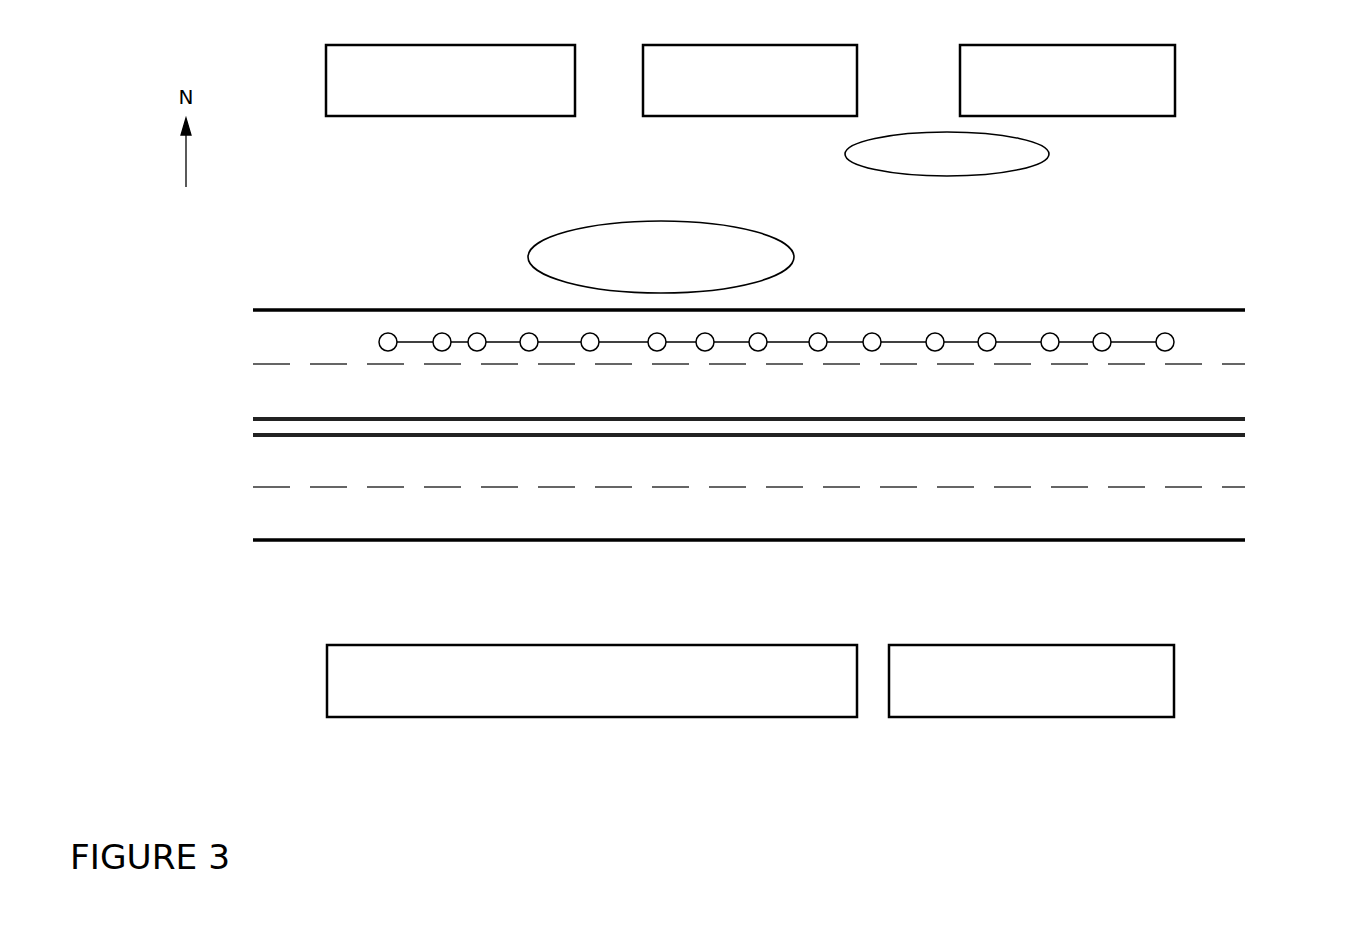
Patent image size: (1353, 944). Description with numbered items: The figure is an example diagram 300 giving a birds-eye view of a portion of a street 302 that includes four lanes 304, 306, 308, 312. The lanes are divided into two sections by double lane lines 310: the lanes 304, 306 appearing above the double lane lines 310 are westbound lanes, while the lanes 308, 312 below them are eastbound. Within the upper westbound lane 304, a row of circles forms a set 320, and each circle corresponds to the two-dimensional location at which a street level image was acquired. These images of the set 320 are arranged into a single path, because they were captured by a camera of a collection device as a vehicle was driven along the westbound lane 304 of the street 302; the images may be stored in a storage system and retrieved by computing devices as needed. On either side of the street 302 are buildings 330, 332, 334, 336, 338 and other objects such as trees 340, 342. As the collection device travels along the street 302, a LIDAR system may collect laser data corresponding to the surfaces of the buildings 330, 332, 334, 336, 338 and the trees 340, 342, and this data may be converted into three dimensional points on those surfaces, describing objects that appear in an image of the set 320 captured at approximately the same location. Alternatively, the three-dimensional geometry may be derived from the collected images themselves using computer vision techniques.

The diagram 300 is at (132, 815).
The street 302 is at (237, 257).
The lane 304 is at (256, 343).
The lane 306 is at (256, 388).
The lane 308 is at (256, 460).
The double lane lines 310 is at (256, 425).
The lane 312 is at (256, 513).
The set of images 320 is at (1175, 342).
The building 330 is at (418, 118).
The building 332 is at (723, 118).
The building 334 is at (1143, 118).
The building 336 is at (418, 720).
The building 338 is at (985, 720).
The tree 340 is at (530, 274).
The tree 342 is at (942, 178).